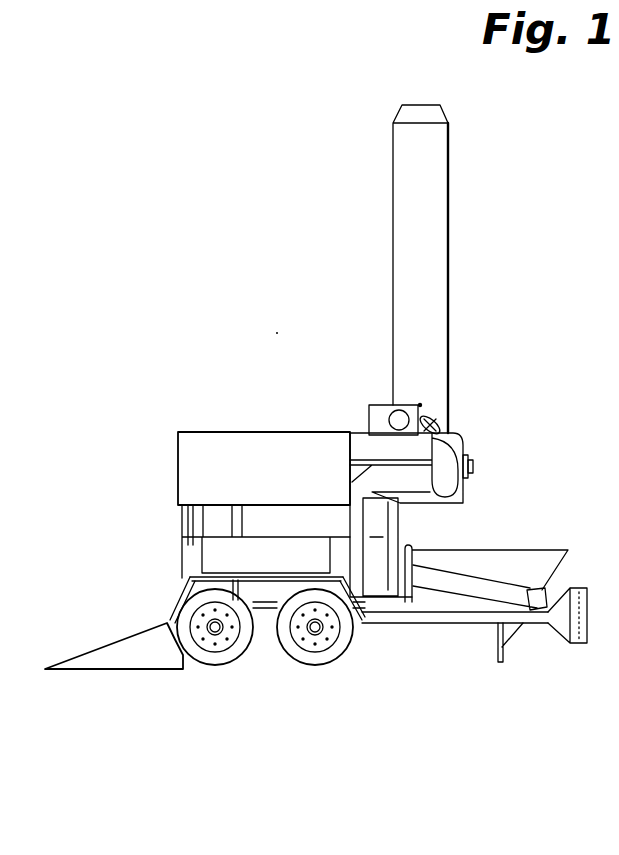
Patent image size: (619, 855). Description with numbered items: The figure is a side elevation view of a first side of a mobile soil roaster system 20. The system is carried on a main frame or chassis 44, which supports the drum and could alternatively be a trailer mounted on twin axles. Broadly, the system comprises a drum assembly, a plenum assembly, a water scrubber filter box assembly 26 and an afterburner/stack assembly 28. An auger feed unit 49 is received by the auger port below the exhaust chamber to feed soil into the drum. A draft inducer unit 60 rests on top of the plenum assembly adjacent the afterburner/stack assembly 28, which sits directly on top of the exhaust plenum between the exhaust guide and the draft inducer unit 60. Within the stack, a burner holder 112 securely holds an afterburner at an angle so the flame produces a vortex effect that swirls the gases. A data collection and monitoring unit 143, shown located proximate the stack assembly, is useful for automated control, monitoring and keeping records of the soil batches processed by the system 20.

The soil roaster system 20 is at (231, 300).
The water scrubber filter box assembly 26 is at (255, 452).
The afterburner/stack assembly 28 is at (427, 157).
The main frame or chassis 44 is at (432, 617).
The auger feed unit 49 is at (475, 588).
The draft inducer unit 60 is at (369, 418).
The burner mount or holder 112 is at (437, 423).
The data collection and monitoring unit 143 is at (473, 466).